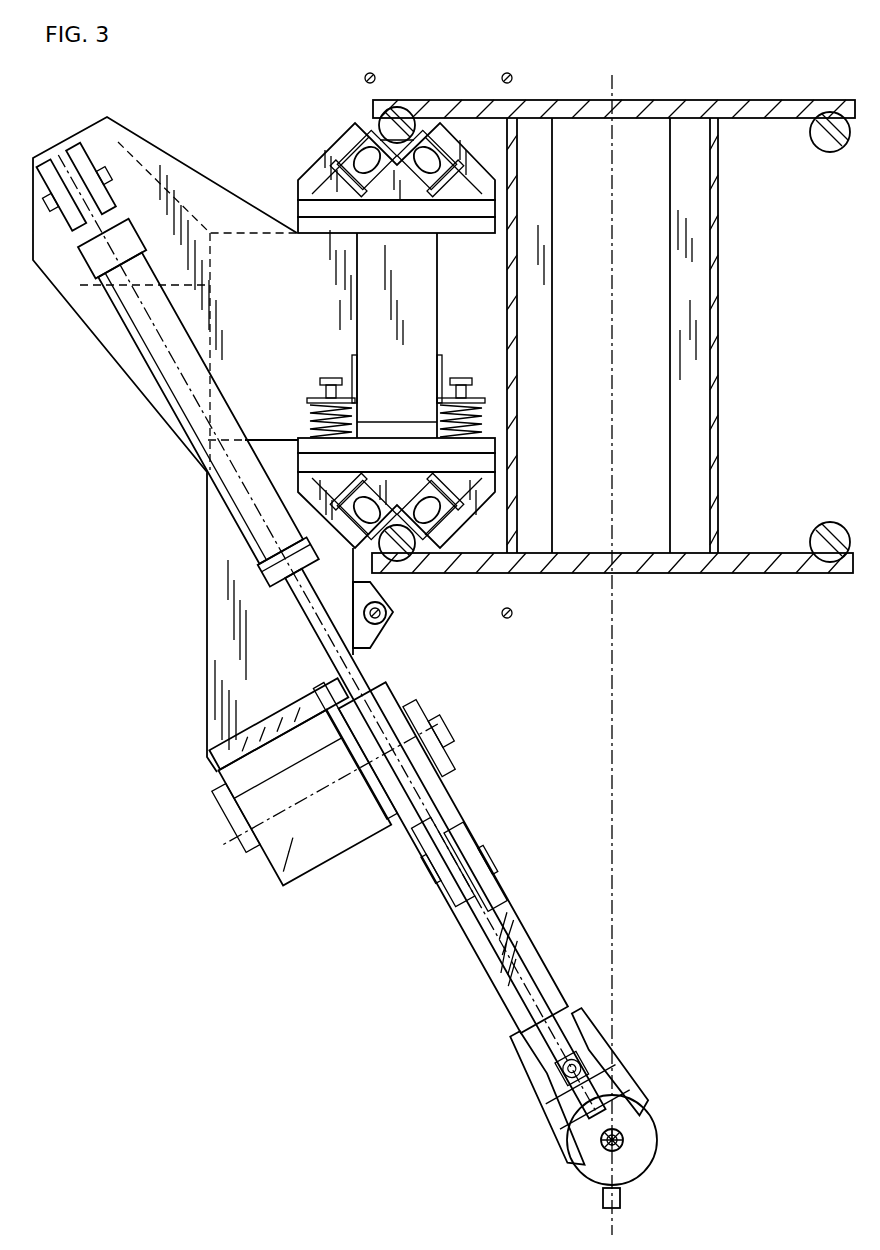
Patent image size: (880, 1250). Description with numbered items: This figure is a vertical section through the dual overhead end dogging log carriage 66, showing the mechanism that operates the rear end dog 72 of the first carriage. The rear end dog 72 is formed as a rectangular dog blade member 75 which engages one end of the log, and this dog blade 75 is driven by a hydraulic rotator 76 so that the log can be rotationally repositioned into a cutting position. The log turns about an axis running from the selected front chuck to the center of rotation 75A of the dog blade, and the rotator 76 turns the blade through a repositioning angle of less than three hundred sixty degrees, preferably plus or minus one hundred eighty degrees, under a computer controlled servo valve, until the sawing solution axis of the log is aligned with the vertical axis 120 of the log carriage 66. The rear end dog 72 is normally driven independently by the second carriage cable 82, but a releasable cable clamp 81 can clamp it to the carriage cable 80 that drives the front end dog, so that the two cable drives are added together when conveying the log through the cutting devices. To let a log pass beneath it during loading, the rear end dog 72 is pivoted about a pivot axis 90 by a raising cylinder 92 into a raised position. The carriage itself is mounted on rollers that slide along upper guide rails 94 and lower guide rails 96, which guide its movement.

The log carriage 66 is at (645, 78).
The rear end dog 72 is at (525, 936).
The dog blade member 75 is at (621, 1200).
The center of rotation of the dog blade 75A is at (623, 1135).
The hydraulic rotator 76 is at (655, 1166).
The carriage cable 80 is at (374, 76).
The releasable cable clamp 81 is at (378, 625).
The carriage cable 82 is at (510, 75).
The pivot axis 90 is at (308, 803).
The raising cylinder 92 is at (220, 392).
The upper guide rails 94 is at (398, 110).
The lower guide rails 96 is at (392, 520).
The vertical axis of the log carriage 120 is at (618, 745).